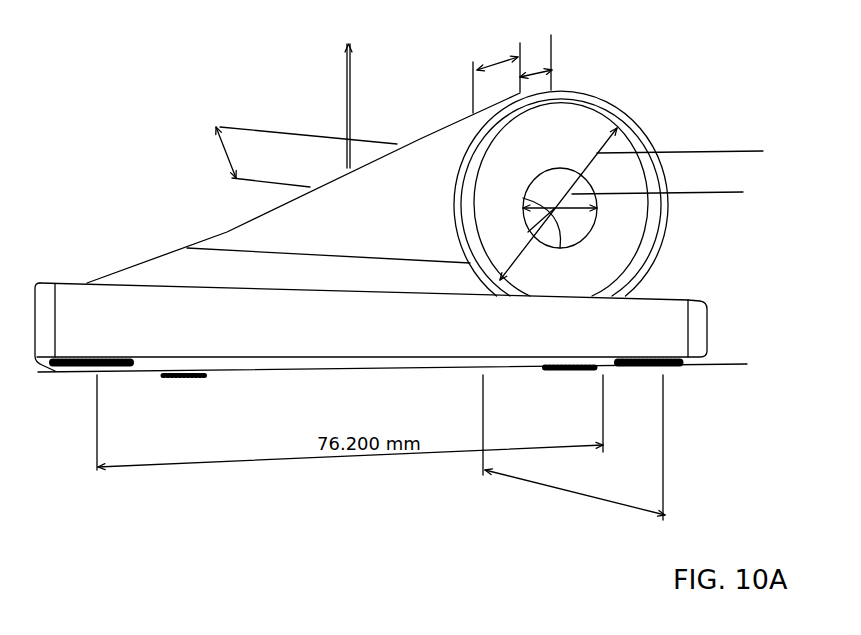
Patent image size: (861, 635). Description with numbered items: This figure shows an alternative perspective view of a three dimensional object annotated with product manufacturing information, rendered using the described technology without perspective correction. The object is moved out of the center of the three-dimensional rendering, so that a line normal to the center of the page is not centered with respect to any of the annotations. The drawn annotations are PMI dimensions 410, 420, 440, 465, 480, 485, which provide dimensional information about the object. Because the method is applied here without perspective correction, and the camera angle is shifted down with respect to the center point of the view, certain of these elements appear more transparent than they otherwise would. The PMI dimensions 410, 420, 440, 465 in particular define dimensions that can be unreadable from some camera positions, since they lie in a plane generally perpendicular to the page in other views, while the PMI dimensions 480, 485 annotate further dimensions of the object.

The PMI dimension 410 is at (553, 63).
The PMI dimension 420 is at (353, 119).
The PMI dimension 440 is at (248, 126).
The PMI dimension 465 is at (668, 450).
The PMI dimension 480 is at (732, 153).
The PMI dimension 485 is at (728, 197).